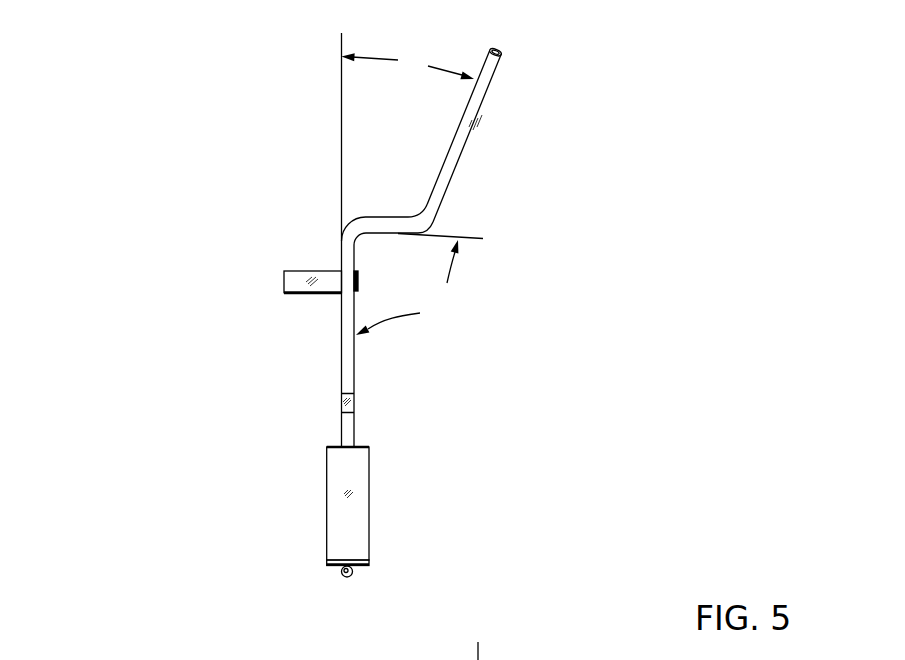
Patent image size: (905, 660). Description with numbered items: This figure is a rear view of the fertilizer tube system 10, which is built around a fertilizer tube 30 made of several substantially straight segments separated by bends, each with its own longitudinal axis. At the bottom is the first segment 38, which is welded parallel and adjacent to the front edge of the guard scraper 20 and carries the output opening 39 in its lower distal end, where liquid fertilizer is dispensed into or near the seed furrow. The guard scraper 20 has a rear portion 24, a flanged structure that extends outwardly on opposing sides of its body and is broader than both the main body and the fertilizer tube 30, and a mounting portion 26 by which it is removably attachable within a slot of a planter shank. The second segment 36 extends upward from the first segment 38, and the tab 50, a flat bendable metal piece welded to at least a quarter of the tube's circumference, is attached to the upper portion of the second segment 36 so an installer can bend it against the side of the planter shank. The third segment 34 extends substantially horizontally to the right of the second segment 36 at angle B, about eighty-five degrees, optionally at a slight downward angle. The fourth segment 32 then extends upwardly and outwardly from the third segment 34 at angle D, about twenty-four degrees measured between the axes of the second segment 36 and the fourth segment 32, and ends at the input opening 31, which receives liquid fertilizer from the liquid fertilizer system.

The fertilizer tube system 10 is at (146, 141).
The guard scraper 20 is at (316, 476).
The rear portion 24 is at (362, 470).
The mounting portion 26 is at (355, 396).
The fertilizer tube 30 is at (368, 365).
The input opening 31 is at (499, 46).
The fourth segment 32 is at (470, 137).
The third segment 34 is at (385, 217).
The second segment 36 is at (341, 330).
The first segment 38 is at (355, 572).
The output opening 39 is at (340, 574).
The tab 50 is at (284, 278).